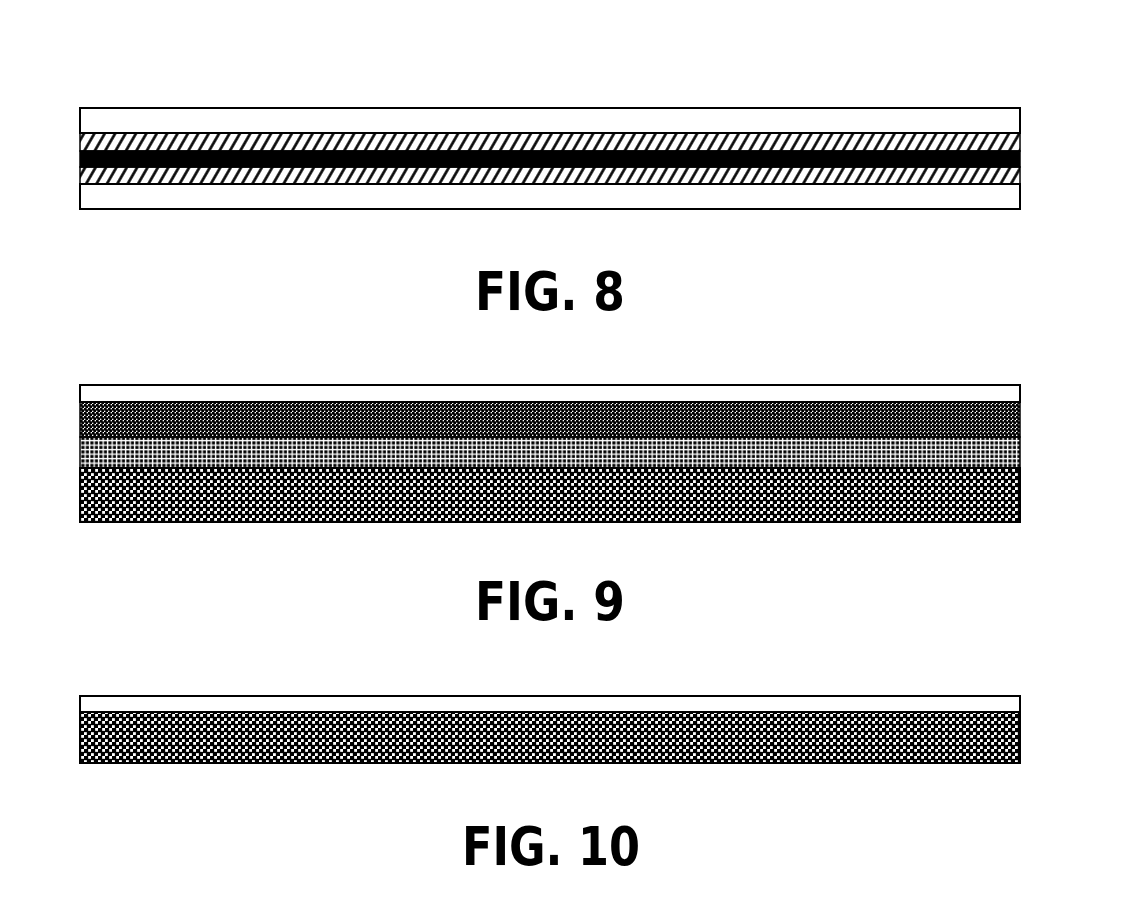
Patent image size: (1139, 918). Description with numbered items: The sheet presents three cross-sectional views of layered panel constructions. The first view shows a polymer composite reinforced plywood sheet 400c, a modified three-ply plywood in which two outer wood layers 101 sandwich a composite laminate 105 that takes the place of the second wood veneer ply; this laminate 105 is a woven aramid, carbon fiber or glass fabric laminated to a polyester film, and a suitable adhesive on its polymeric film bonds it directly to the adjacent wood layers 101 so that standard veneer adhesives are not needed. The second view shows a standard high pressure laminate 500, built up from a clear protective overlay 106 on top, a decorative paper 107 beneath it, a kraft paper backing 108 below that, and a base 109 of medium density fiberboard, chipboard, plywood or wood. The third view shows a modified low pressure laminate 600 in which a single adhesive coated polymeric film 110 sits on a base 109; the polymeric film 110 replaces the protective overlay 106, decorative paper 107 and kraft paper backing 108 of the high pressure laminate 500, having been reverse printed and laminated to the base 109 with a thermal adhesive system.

In FIG. 8, the polymer composite reinforced plywood sheet 400c is at (597, 120).
In FIG. 8, the wood layer 101 is at (1012, 197).
In FIG. 8, the composite laminate 105 is at (1020, 134).
In FIG. 9, the high pressure laminate 500 is at (555, 420).
In FIG. 9, the clear protective overlay 106 is at (1010, 393).
In FIG. 9, the decorative paper 107 is at (88, 427).
In FIG. 9, the kraft paper backing 108 is at (88, 452).
In FIG. 9, the base 109 is at (1010, 493).
In FIG. 10, the base 109 is at (1010, 738).
In FIG. 10, the modified low pressure laminate 600 is at (580, 721).
In FIG. 10, the adhesive coated polymeric film 110 is at (1010, 704).